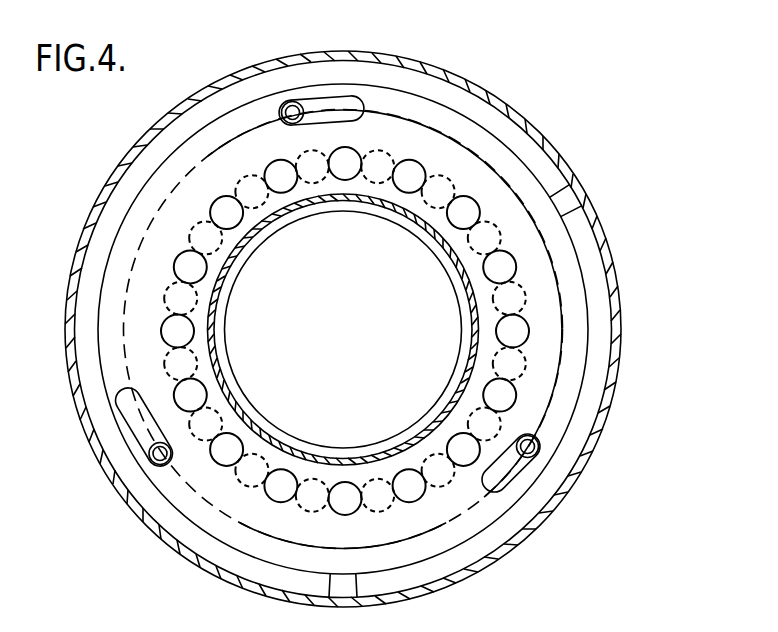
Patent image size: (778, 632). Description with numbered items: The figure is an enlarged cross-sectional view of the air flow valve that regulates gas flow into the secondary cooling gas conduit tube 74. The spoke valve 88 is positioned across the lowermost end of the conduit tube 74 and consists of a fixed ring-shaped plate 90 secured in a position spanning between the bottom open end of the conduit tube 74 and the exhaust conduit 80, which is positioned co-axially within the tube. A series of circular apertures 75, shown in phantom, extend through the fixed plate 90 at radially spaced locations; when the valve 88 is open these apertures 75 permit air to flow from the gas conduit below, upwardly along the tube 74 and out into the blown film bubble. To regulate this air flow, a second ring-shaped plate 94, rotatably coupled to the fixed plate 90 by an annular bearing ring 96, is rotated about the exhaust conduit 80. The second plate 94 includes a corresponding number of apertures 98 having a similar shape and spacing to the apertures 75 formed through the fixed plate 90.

The secondary cooling gas conduit tube 74 is at (534, 128).
The fixed ring-shaped plate 90 is at (456, 100).
The spoke valve 88 is at (564, 288).
The second ring-shaped plate 94 is at (540, 336).
The annular bearing ring 96 is at (460, 510).
The exhaust conduit 80 is at (282, 232).
The circular apertures 75 is at (424, 200).
The apertures 98 is at (198, 326).